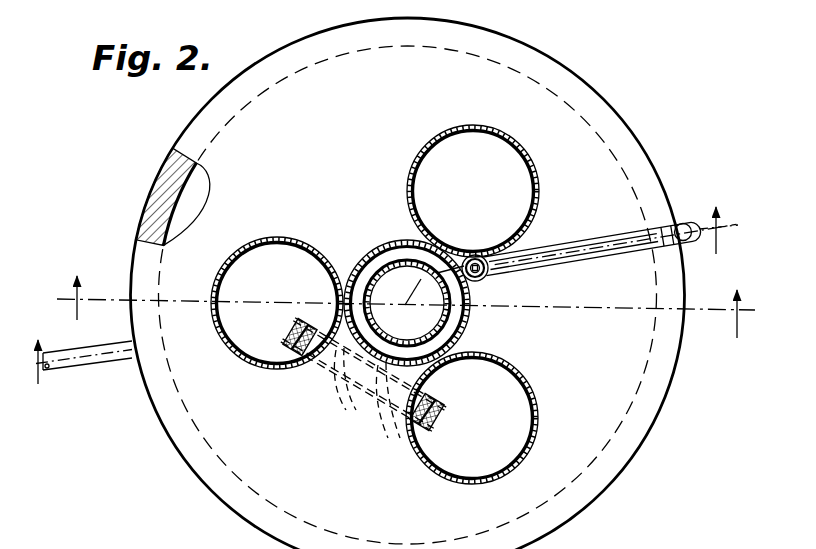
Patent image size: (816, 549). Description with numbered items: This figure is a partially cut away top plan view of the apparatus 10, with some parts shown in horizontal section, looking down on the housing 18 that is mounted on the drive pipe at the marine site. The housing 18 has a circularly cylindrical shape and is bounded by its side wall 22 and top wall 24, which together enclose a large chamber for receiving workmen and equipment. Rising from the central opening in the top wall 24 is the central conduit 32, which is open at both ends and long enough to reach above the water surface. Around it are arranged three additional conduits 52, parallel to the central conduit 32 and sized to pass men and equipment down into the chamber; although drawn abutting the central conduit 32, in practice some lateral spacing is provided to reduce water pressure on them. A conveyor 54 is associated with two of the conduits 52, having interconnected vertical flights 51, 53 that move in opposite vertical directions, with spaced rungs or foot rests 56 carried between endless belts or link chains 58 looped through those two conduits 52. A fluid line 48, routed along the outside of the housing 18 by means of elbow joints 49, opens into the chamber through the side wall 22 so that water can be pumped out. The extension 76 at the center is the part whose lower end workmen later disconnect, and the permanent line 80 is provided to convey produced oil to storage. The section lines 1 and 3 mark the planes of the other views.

The section line 1- 1 is at (404, 307).
The section line 3- 3 is at (382, 295).
The apparatus 10 is at (663, 443).
The housing 18 is at (166, 452).
The side wall 22 is at (160, 182).
The top wall 24 is at (354, 139).
The central conduit 32 is at (450, 315).
The fluid line 48 is at (566, 244).
The elbow joints 49 is at (677, 225).
The vertical flight 51 is at (441, 431).
The additional conduits 52 is at (449, 127).
The vertical flight 53 is at (283, 341).
The conveyor 54 is at (338, 380).
The rungs or foot rests 56 is at (313, 320).
The endless belts or link chains 58 is at (394, 436).
The extension 76 is at (380, 270).
The permanent line 80 is at (106, 365).